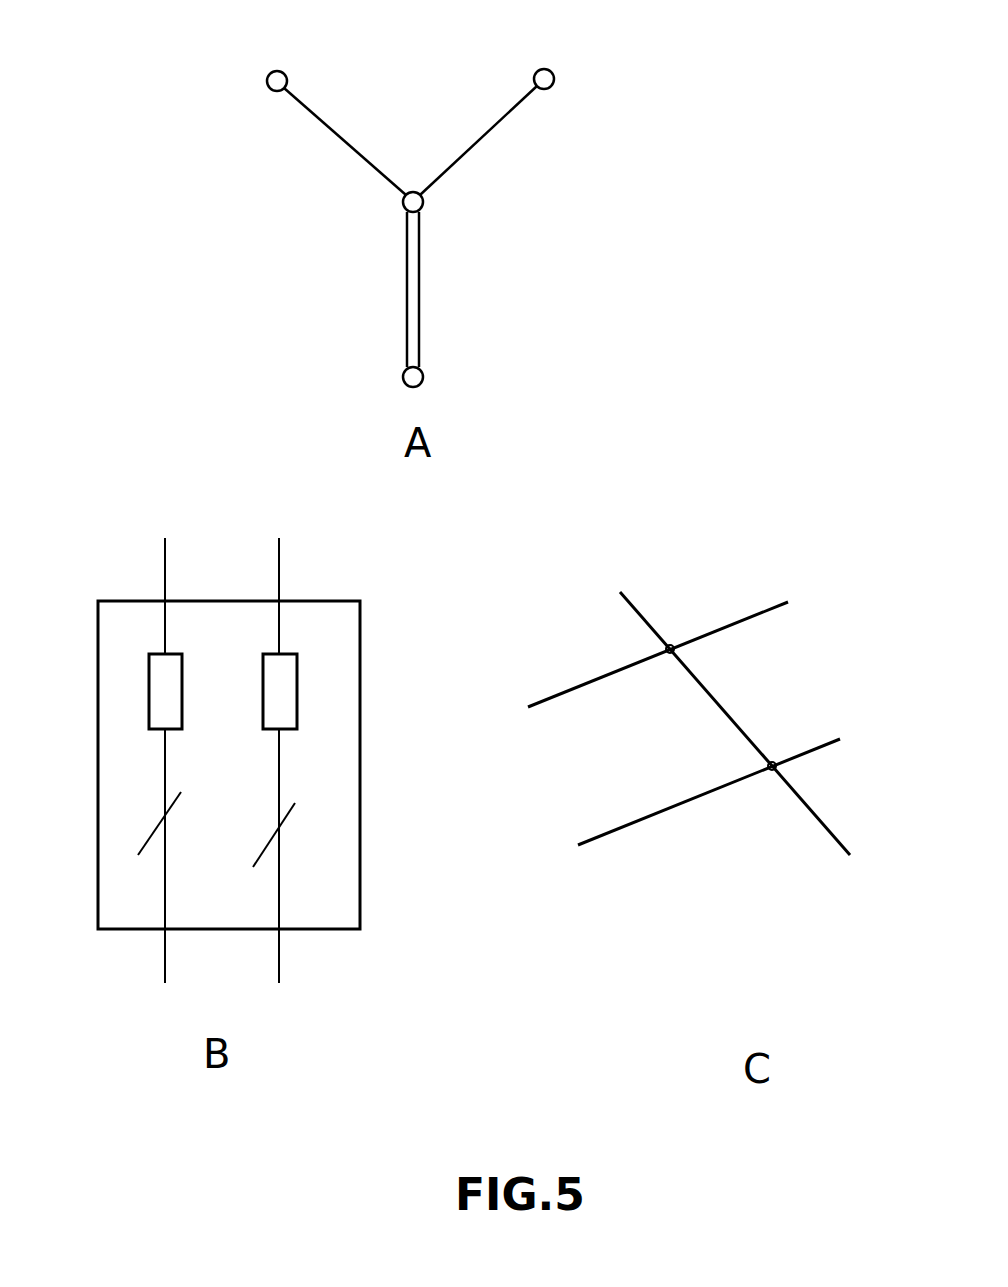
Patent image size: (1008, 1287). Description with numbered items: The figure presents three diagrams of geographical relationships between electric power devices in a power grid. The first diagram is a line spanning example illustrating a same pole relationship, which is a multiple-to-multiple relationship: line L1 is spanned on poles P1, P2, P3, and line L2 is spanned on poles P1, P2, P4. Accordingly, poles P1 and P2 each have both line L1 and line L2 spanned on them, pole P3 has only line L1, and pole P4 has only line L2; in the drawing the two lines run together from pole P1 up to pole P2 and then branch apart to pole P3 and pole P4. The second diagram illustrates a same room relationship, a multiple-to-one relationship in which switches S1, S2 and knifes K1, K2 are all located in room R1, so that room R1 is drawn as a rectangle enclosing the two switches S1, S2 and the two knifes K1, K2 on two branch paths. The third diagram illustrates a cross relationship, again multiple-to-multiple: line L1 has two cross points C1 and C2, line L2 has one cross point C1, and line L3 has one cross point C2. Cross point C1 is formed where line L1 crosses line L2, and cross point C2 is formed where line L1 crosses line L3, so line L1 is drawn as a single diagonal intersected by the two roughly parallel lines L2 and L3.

The pole P1 is at (435, 377).
The pole P2 is at (435, 202).
The pole P3 is at (295, 81).
The pole P4 is at (563, 79).
The line L1 is at (567, 471).
The line L2 is at (629, 480).
The line L3 is at (658, 672).
The room R1 is at (209, 765).
The switch S1 is at (146, 760).
The switch S2 is at (302, 760).
The knife K1 is at (144, 823).
The knife K2 is at (287, 835).
The cross point C1 is at (786, 749).
The cross point C2 is at (698, 658).